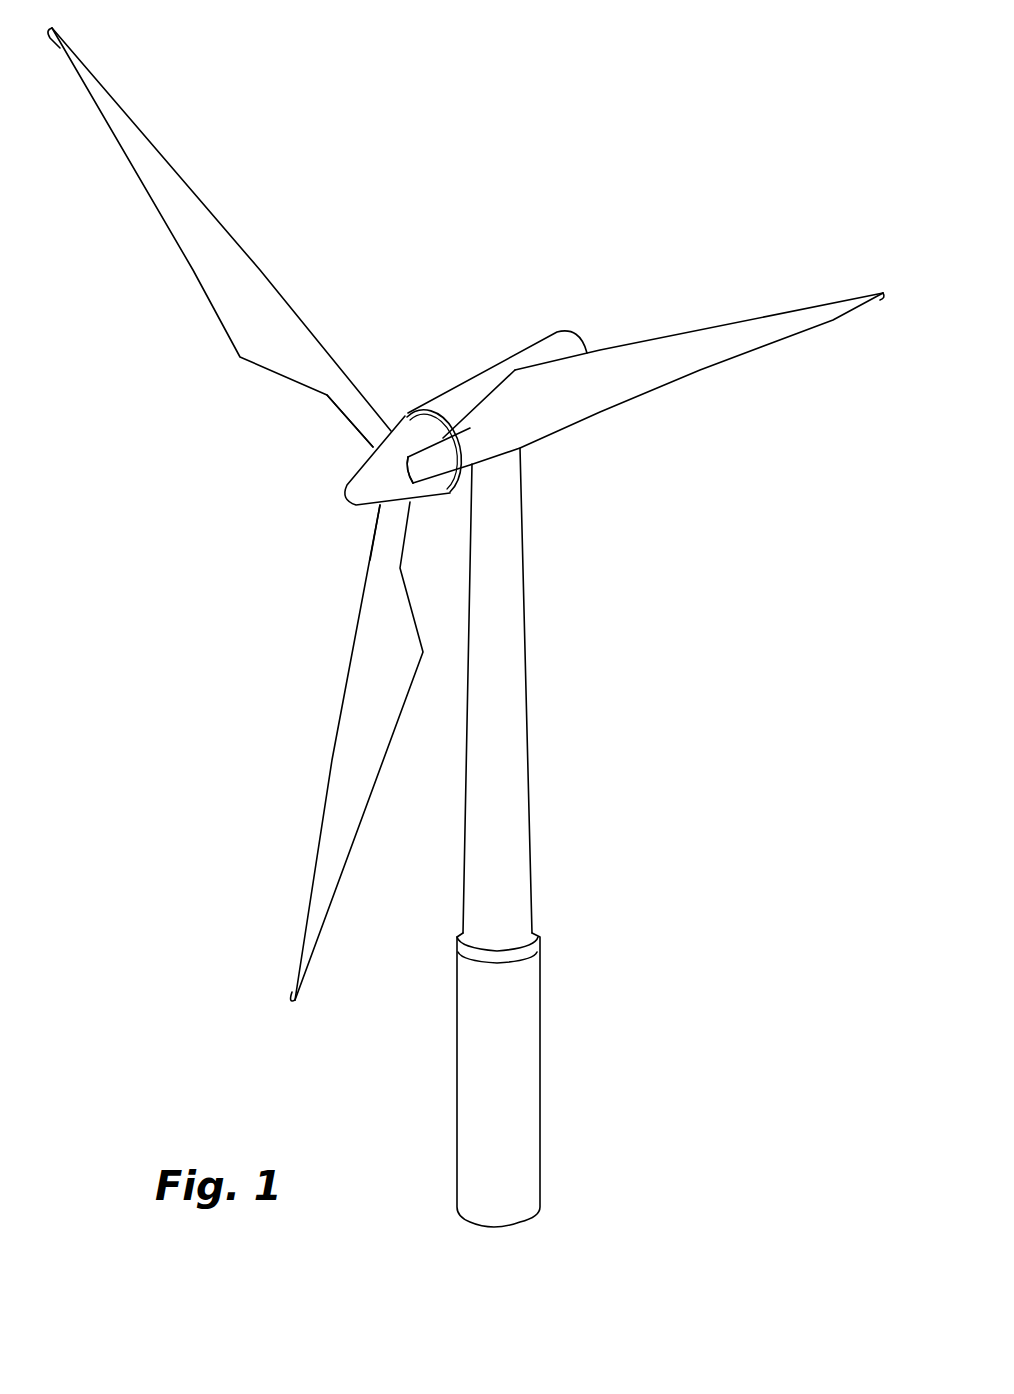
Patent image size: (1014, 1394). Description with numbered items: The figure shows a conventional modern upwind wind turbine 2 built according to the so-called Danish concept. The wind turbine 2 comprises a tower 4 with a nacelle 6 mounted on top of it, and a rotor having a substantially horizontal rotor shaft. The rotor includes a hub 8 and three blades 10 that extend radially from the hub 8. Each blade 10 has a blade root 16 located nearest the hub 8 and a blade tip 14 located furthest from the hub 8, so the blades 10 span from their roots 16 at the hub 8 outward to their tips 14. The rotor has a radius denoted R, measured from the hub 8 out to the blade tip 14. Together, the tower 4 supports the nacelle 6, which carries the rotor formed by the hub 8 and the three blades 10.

The wind turbine 2 is at (624, 777).
The tower 4 is at (515, 697).
The nacelle 6 is at (460, 397).
The hub 8 is at (365, 478).
The blades 10 is at (253, 328).
The blade tip 14 is at (100, 85).
The blade root 16 is at (373, 442).